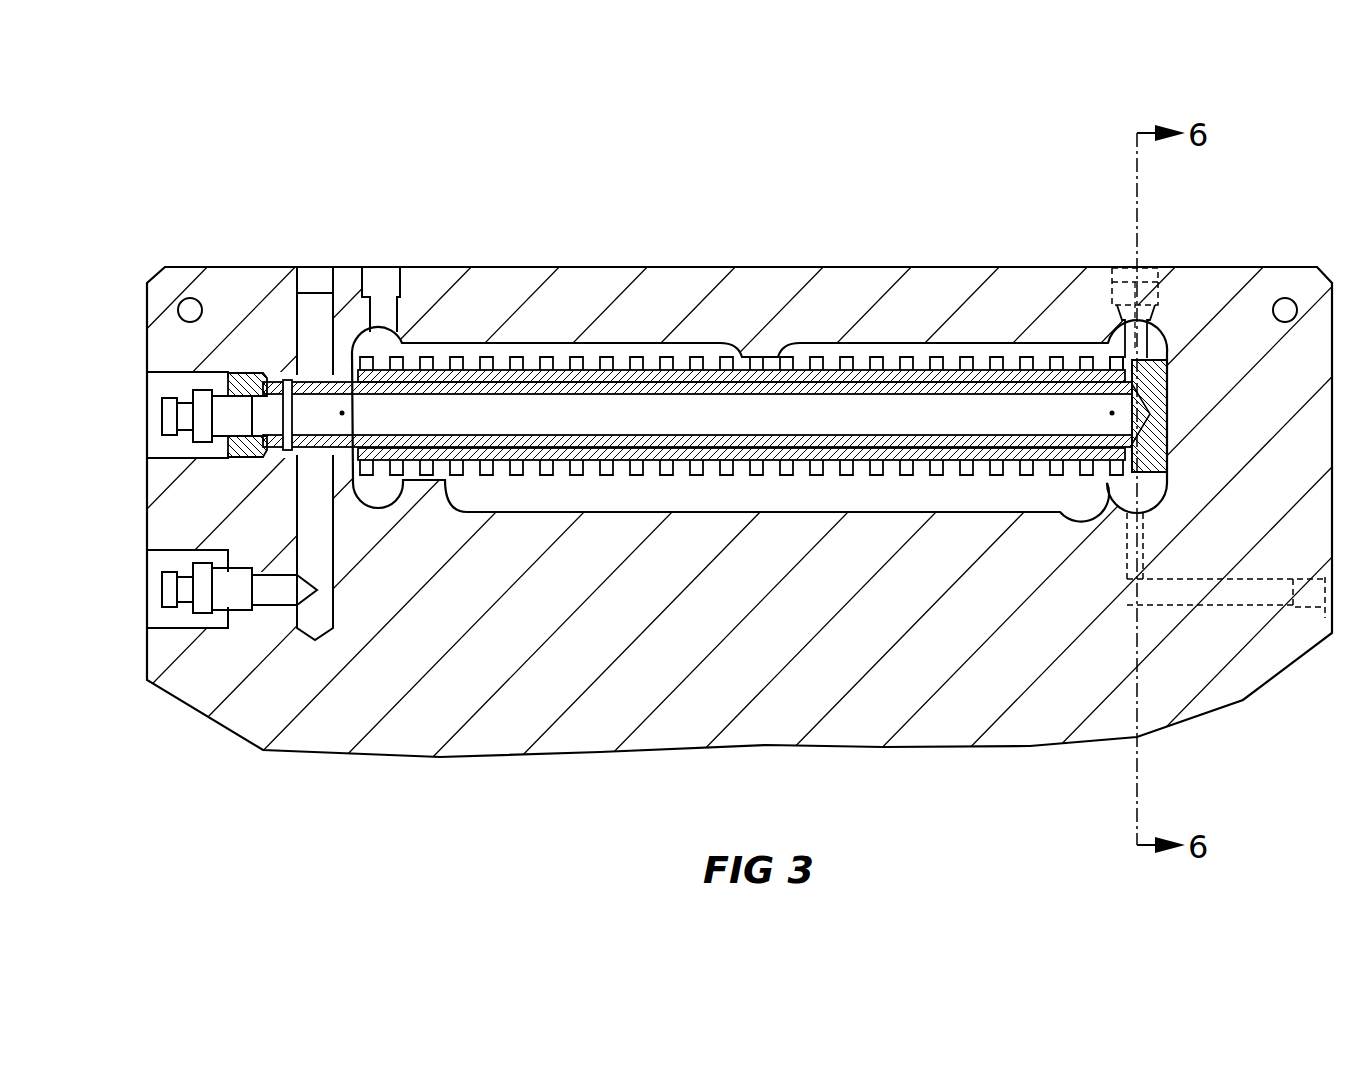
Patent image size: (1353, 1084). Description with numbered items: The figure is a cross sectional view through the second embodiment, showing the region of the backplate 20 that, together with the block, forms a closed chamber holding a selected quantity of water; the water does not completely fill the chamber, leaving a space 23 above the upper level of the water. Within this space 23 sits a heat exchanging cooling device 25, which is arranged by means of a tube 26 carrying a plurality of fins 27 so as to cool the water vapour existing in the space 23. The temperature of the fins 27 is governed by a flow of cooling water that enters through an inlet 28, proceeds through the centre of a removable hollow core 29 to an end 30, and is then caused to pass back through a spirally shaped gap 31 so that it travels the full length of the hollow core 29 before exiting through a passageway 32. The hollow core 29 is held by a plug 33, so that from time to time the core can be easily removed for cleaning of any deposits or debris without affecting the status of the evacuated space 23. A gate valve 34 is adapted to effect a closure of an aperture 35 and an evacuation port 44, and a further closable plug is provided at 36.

The backplate 20 is at (930, 723).
The space 23 is at (628, 500).
The heat exchanging cooling device 25 is at (910, 350).
The tube 26 is at (540, 357).
The fins 27 is at (640, 355).
The inlet 28 is at (162, 416).
The removable core 29 is at (673, 429).
The end 30 is at (1130, 410).
The spirally shaped gap 31 is at (1112, 375).
The passageway 32 is at (162, 590).
The plug 33 is at (228, 443).
The gate valve 34 is at (1165, 266).
The aperture 35 is at (1125, 285).
The closable plug 36 is at (388, 277).
The evacuation port 44 is at (1228, 592).